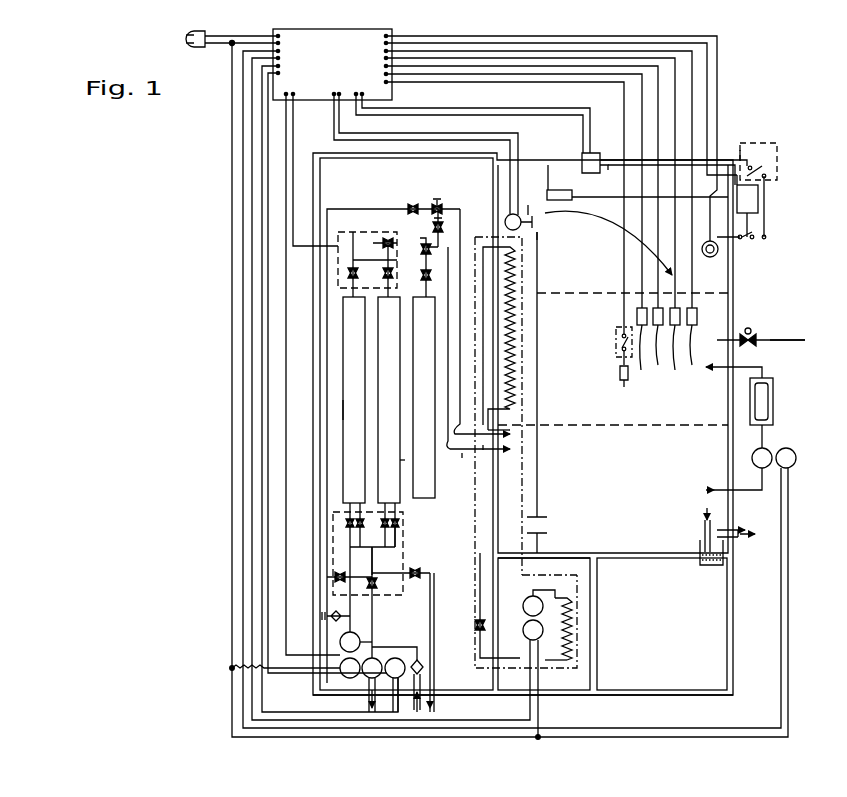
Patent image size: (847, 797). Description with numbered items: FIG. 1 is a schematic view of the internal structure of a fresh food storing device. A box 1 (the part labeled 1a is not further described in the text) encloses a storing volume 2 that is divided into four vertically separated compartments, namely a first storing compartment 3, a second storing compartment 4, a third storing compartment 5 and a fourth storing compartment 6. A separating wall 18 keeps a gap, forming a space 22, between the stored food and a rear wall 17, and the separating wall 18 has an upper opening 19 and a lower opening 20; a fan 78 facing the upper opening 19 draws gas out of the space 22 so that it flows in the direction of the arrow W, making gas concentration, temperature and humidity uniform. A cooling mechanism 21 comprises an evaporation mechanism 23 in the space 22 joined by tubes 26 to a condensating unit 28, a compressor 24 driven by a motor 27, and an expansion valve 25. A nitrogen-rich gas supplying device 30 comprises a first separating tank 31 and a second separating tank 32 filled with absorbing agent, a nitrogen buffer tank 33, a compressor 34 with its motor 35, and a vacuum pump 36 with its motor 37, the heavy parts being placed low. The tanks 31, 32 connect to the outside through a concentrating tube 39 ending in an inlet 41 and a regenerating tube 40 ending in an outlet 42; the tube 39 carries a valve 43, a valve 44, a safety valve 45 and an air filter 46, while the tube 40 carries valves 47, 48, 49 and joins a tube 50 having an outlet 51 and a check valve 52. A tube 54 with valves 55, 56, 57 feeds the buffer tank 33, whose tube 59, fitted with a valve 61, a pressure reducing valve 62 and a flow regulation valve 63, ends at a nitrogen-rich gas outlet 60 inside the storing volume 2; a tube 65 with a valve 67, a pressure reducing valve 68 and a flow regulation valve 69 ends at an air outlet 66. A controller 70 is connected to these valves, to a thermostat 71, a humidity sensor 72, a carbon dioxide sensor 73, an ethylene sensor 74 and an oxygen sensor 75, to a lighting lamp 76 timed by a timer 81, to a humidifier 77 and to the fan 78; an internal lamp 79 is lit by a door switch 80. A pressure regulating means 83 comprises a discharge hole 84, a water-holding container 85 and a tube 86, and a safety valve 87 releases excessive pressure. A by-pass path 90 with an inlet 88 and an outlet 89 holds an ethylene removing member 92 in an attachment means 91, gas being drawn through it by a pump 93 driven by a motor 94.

The box 1 is at (687, 702).
The unit housing 1a is at (318, 367).
The storing volume 2 is at (635, 460).
The first storing compartment 3 is at (632, 269).
The second storing compartment 4 is at (613, 371).
The third storing compartment 5 is at (643, 490).
The fourth storing compartment 6 is at (662, 624).
The rear wall 17 is at (502, 273).
The separating wall 18 is at (538, 343).
The upper opening 19 is at (535, 222).
The lower opening 20 is at (545, 526).
The cooling mechanism 21 is at (540, 495).
The space 22 is at (515, 375).
The evaporation mechanism 23 is at (513, 305).
The compressor 24 is at (545, 588).
The expansion valve 25 is at (484, 630).
The tubes 26 is at (508, 608).
The motor 27 is at (545, 631).
The condensating unit 28 is at (572, 606).
The nitrogen-rich gas supplying device 30 is at (338, 441).
The first separating tank 31 is at (345, 329).
The second separating tank 32 is at (380, 390).
The nitrogen buffer tank 33 is at (415, 363).
The compressor 34 is at (340, 642).
The motor 35 is at (346, 678).
The vacuum pump 36 is at (372, 690).
The motor 37 is at (395, 690).
The concentrating tube 39 is at (403, 647).
The regenerating tube 40 is at (375, 558).
The inlet 41 is at (400, 700).
The outlet 42 is at (369, 700).
The valve 43 is at (347, 521).
The valve 44 is at (397, 539).
The safety valve 45 is at (324, 616).
The air filter 46 is at (420, 700).
The valve 47 is at (358, 519).
The valve 48 is at (397, 521).
The valve 49 is at (378, 585).
The tube 50 is at (432, 623).
The outlet 51 is at (435, 690).
The check valve 52 is at (422, 578).
The tube 54 is at (405, 460).
The valve 55 is at (353, 265).
The valve 56 is at (340, 285).
The valve 57 is at (380, 240).
The tube 59 is at (462, 458).
The outlet 60 is at (505, 454).
The valve 61 is at (423, 273).
The pressure reducing valve 62 is at (430, 250).
The flow regulation valve 63 is at (440, 218).
The tube 65 is at (512, 441).
The air outlet 66 is at (512, 430).
The valve 67 is at (338, 576).
The pressure reducing valve 68 is at (412, 206).
The flow regulation valve 69 is at (437, 199).
The controller 70 is at (385, 31).
The thermostat 71 is at (624, 384).
The humidity sensor 72 is at (641, 370).
The carbon dioxide sensor 73 is at (675, 370).
The ethylene sensor 74 is at (692, 365).
The oxygen sensor 75 is at (658, 365).
The lighting lamp 76 is at (560, 190).
The humidifier 77 is at (600, 153).
The fan 78 is at (530, 205).
The internal lamp 79 is at (718, 252).
The door switch 80 is at (755, 143).
The timer 81 is at (760, 207).
The pressure regulating means 83 is at (738, 527).
The discharge hole 84 is at (745, 539).
The container 85 is at (700, 547).
The tube 86 is at (703, 527).
The safety valve 87 is at (750, 329).
The inlet 88 is at (740, 493).
The outlet 89 is at (762, 347).
The by-pass path 90 is at (765, 436).
The attachment means 91 is at (772, 385).
The ethylene removing member 92 is at (765, 384).
The pump 93 is at (772, 451).
The motor 94 is at (796, 460).
The arrow W is at (608, 243).